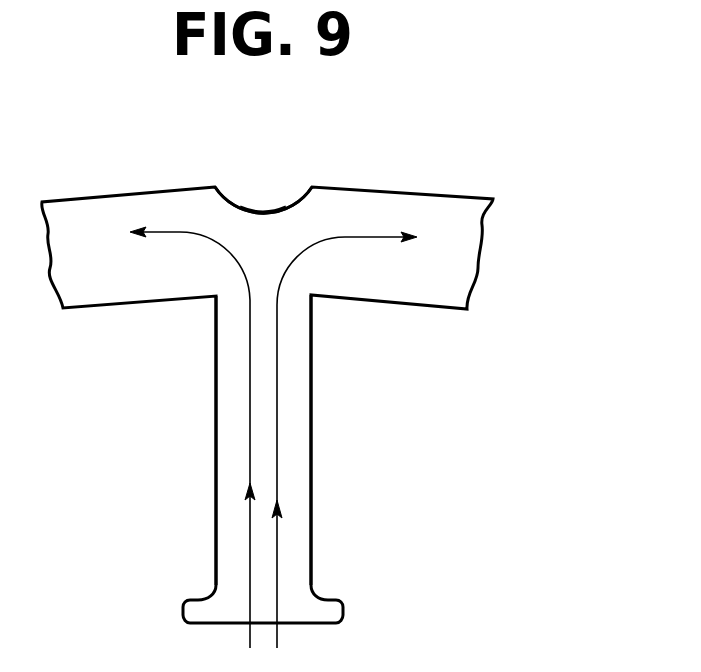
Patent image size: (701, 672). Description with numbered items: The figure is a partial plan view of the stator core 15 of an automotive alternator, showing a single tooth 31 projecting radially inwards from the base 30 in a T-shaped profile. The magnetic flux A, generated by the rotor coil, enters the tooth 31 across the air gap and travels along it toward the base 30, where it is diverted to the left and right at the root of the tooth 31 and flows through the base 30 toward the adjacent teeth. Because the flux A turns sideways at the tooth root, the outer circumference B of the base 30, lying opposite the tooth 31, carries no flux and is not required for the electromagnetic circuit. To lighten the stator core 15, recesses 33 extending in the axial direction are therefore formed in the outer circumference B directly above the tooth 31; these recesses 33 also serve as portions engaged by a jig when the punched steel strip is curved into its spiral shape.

The stator core 15 is at (556, 150).
The base 30 is at (419, 282).
The teeth 31 is at (230, 452).
The recesses 33 is at (288, 203).
The magnetic flux A is at (248, 545).
The outer circumference B is at (261, 230).